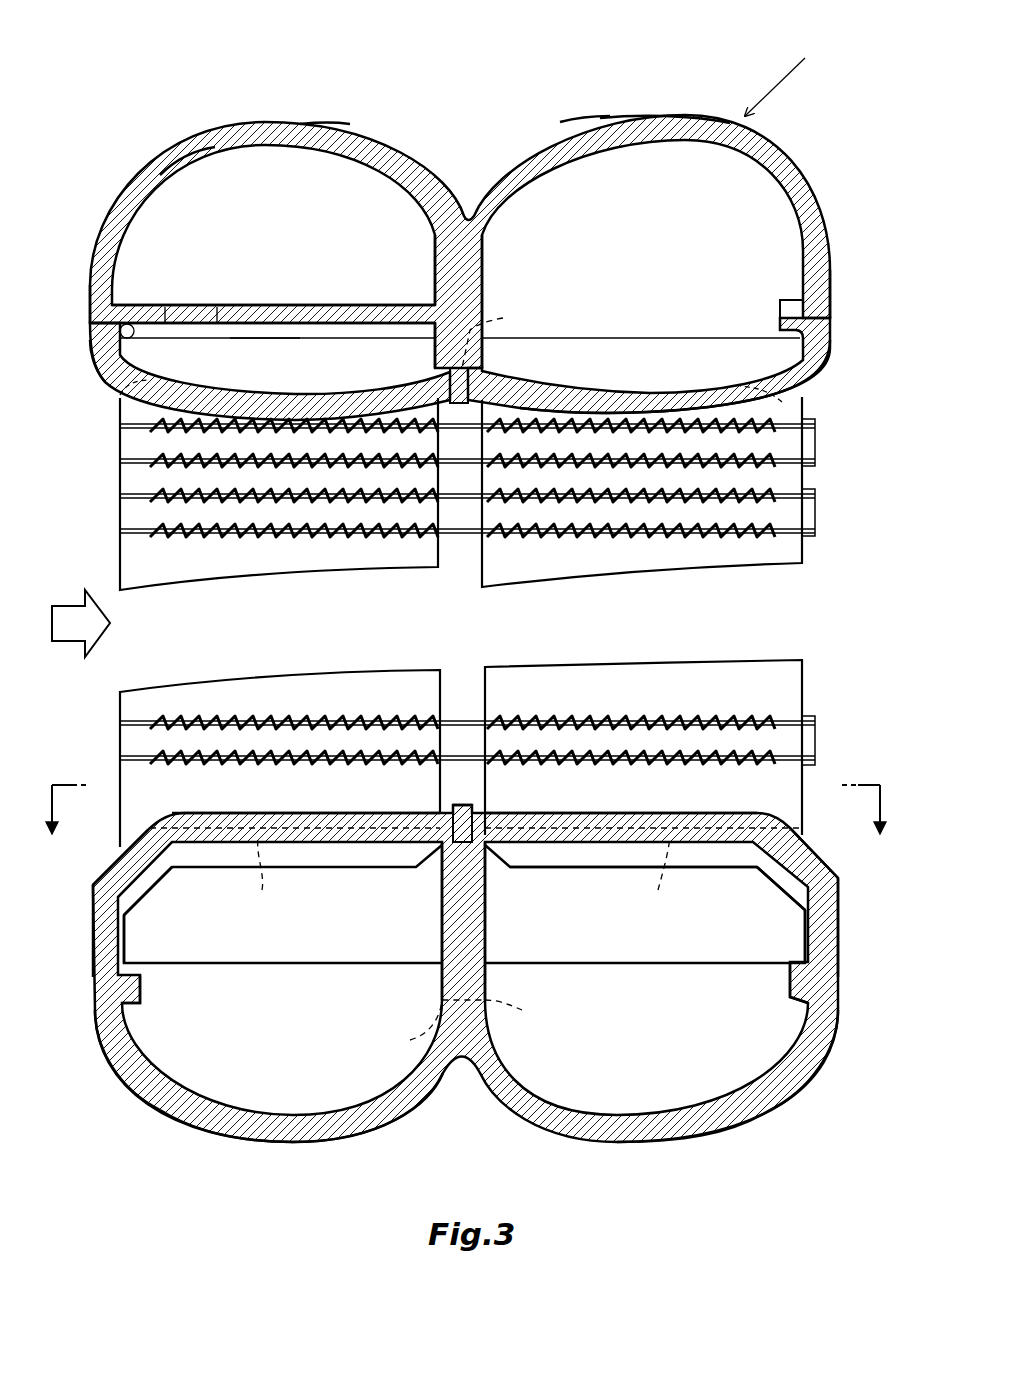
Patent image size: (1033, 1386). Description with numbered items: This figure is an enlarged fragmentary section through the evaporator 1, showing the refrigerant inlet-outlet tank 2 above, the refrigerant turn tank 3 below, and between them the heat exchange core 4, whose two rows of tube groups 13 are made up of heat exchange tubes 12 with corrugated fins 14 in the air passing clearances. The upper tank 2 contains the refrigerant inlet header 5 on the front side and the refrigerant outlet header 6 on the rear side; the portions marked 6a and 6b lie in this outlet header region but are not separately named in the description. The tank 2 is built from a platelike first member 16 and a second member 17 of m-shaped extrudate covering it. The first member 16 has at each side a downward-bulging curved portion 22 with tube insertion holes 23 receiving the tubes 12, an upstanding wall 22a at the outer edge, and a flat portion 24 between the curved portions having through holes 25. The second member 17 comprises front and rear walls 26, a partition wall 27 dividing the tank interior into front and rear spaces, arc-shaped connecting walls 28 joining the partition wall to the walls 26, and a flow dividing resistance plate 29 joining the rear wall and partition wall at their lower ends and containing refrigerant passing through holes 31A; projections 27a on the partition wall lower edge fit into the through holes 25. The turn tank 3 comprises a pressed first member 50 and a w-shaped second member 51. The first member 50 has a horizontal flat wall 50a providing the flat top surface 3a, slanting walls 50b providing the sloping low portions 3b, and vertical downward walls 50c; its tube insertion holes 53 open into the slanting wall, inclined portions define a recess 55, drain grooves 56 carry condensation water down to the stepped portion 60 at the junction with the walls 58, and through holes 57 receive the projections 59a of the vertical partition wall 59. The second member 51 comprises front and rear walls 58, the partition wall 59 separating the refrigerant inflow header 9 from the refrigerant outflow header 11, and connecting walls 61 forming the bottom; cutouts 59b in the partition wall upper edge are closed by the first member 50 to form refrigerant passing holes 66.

The evaporator 1 is at (782, 69).
The refrigerant inlet-outlet tank 2 is at (792, 130).
The refrigerant turn tank 3 is at (585, 1162).
The horizontal flat surface 3a is at (515, 813).
The low portion 3b is at (805, 852).
The heat exchange core 4 is at (454, 515).
The refrigerant inlet header 5 is at (660, 211).
The refrigerant outlet header 6 is at (290, 216).
The chamber inner wall 6a is at (188, 157).
The chamber bottom sheet 6b is at (255, 336).
The refrigerant inflow header 9 is at (610, 1027).
The refrigerant outflow header 11 is at (296, 1027).
The heat exchange tubes 12 is at (650, 567).
The tube groups 13 is at (132, 707).
The corrugated fins 14 is at (803, 527).
The first member 16 is at (680, 397).
The second member 17 is at (640, 115).
The curved portion 22 is at (785, 405).
The upstanding walls 22a is at (817, 335).
The tube insertion holes 23 is at (785, 402).
The flat portion 24 is at (502, 326).
The through holes 25 is at (435, 350).
The front and rear walls 26 is at (818, 280).
The partition wall 27 is at (475, 283).
The projections 27a is at (492, 402).
The connecting walls 28 is at (580, 118).
The flow dividing resistance plate 29 is at (328, 318).
The refrigerant passing through holes 31A is at (205, 322).
The first member 50 is at (337, 830).
The horizontal flat wall 50a is at (593, 825).
The slanting wall 50b is at (773, 864).
The vertical downward wall 50c is at (808, 935).
The second member 51 is at (393, 1128).
The tube insertion holes 53 is at (815, 887).
The recess 55 is at (469, 880).
The drain grooves 56 is at (828, 925).
The through holes 57 is at (448, 818).
The front and rear walls 58 is at (820, 1020).
The vertical partition wall 59 is at (442, 970).
The projections 59a is at (458, 800).
The refrigerant passing cutouts 59b is at (419, 1029).
The stepped portion 60 is at (815, 987).
The connecting walls 61 is at (710, 1143).
The refrigerant passing holes 66 is at (524, 1008).